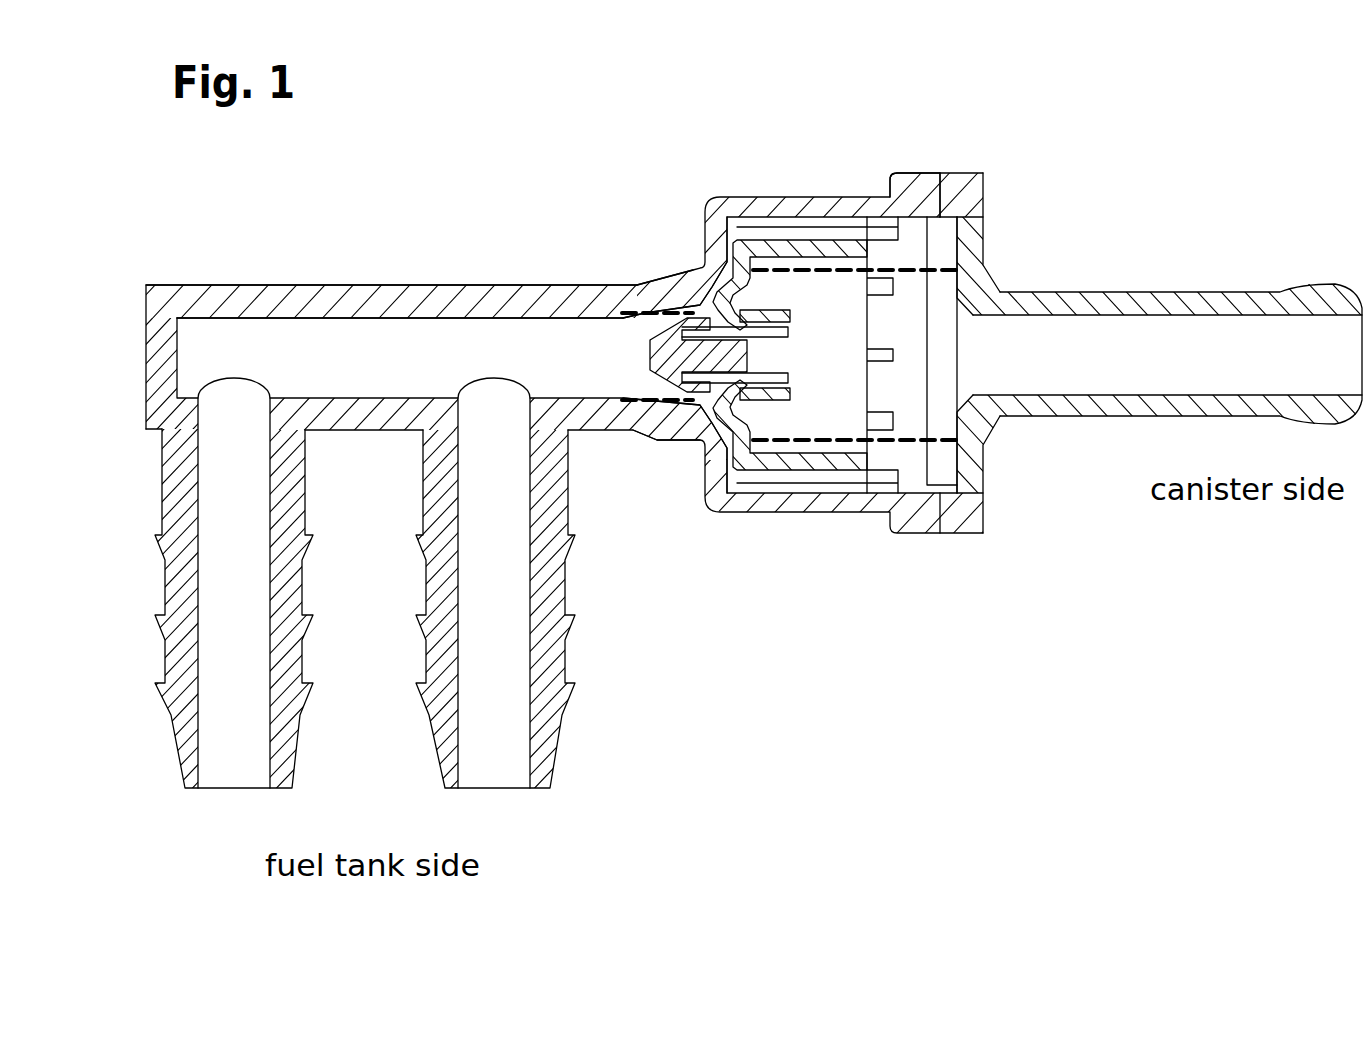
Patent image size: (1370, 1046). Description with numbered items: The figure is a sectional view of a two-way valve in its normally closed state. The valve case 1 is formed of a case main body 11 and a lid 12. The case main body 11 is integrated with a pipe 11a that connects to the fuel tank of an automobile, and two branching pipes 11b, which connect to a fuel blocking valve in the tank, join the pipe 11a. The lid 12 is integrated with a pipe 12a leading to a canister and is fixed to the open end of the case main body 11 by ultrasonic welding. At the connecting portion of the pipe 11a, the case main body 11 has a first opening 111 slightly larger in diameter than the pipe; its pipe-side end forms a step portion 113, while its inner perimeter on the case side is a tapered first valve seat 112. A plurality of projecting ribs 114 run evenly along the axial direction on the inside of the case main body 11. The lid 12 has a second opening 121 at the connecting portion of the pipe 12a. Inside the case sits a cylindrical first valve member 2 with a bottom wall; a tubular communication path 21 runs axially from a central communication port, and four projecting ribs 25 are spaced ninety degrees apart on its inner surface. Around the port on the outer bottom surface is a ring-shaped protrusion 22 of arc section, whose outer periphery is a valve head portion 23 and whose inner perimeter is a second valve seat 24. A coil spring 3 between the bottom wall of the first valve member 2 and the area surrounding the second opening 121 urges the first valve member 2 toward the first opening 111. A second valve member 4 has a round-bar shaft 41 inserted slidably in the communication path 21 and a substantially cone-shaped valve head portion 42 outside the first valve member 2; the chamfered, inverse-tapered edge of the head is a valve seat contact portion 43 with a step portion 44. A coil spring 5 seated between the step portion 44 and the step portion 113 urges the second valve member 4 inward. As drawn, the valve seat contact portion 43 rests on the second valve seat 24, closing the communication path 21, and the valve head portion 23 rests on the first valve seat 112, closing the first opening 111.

The valve case 1 is at (712, 168).
The case main body 11 is at (790, 205).
The pipe 11a is at (350, 285).
The branching pipes 11b is at (430, 512).
The first opening 111 is at (630, 360).
The first valve seat 112 is at (702, 296).
The step portion 113 is at (593, 425).
The projecting ribs 114 is at (907, 292).
The lid 12 is at (975, 492).
The pipe 12a is at (1250, 296).
The second opening 121 is at (968, 352).
The first valve member 2 is at (827, 238).
The coil spring 3 is at (907, 268).
The second valve member 4 is at (728, 320).
The coil spring 5 is at (640, 290).
The communication path 21 is at (775, 400).
The ring-shaped protrusion 22 is at (735, 436).
The valve head portion 23 is at (713, 440).
The second valve seat 24 is at (665, 300).
The projecting ribs 25 is at (790, 420).
The shaft portion 41 is at (830, 360).
The valve head portion 42 is at (657, 425).
The valve seat contact portion 43 is at (752, 405).
The step portion 44 is at (690, 440).